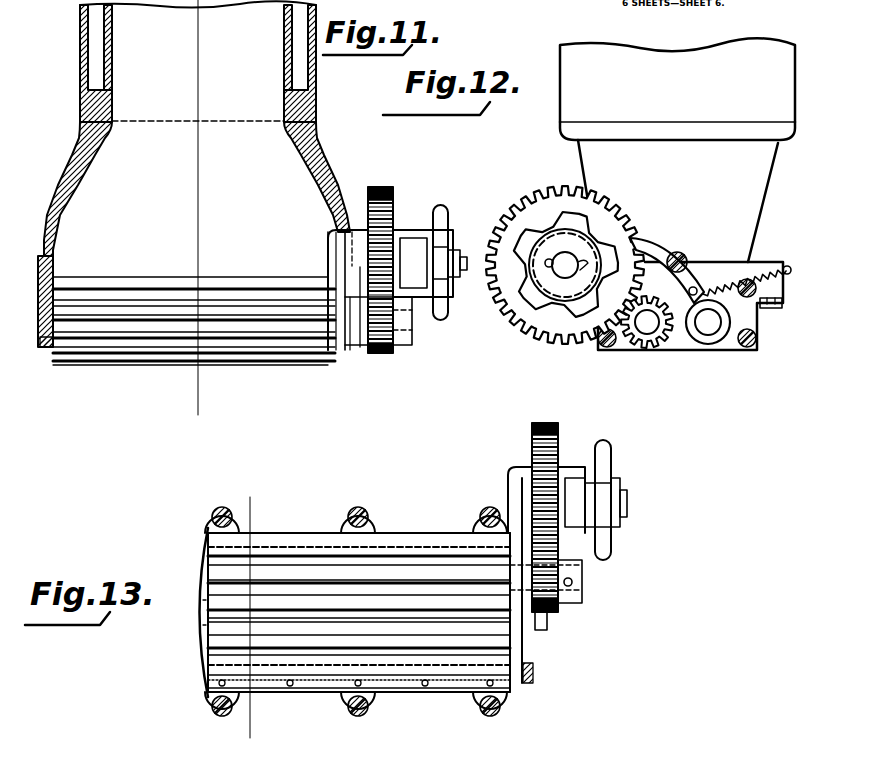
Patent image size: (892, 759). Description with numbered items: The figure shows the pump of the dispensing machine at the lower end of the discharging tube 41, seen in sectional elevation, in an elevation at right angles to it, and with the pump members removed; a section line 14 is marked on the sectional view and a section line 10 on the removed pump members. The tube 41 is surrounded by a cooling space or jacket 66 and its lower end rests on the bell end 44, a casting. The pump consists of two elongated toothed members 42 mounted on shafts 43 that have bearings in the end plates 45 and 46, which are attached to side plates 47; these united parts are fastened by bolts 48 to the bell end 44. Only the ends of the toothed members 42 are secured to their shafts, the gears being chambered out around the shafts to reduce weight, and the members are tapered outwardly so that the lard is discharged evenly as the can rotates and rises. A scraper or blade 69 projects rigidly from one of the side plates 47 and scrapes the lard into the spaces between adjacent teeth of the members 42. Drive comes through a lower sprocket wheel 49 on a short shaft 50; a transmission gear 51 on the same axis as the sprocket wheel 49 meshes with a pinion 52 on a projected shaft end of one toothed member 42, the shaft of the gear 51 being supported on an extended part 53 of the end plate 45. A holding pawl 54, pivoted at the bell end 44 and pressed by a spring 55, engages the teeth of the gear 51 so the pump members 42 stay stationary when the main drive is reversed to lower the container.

In FIG. 13, the section line 10- 10 is at (263, 617).
In FIG. 11, the section line 14- 14 is at (211, 207).
In FIG. 11, the discharging tube 41 is at (84, 70).
In FIG. 12, the discharging tube 41 is at (677, 80).
In FIG. 11, the elongated toothed members 42 is at (130, 307).
In FIG. 12, the elongated toothed members 42 is at (647, 325).
In FIG. 13, the elongated toothed members 42 is at (320, 578).
In FIG. 11, the shafts 43 is at (39, 352).
In FIG. 12, the shafts 43 is at (700, 356).
In FIG. 13, the shafts 43 is at (202, 628).
In FIG. 11, the bell end 44 is at (63, 217).
In FIG. 12, the bell end 44 is at (677, 192).
In FIG. 11, the end plate 45 is at (350, 352).
In FIG. 12, the end plate 45 is at (733, 345).
In FIG. 13, the end plate 45 is at (513, 686).
In FIG. 11, the end plate 46 is at (46, 350).
In FIG. 13, the end plate 46 is at (203, 667).
In FIG. 11, the side plates 47 is at (248, 250).
In FIG. 13, the side plates 47 is at (297, 538).
In FIG. 12, the bolts 48 is at (775, 310).
In FIG. 13, the bolts 48 is at (374, 527).
In FIG. 11, the lower sprocket wheel 49 is at (440, 205).
In FIG. 12, the lower sprocket wheel 49 is at (530, 306).
In FIG. 13, the lower sprocket wheel 49 is at (612, 448).
In FIG. 12, the short shaft 50 is at (566, 264).
In FIG. 13, the short shaft 50 is at (627, 497).
In FIG. 11, the transmission gear 51 is at (387, 185).
In FIG. 12, the transmission gear 51 is at (534, 198).
In FIG. 13, the transmission gear 51 is at (545, 423).
In FIG. 11, the pinion 52 is at (383, 355).
In FIG. 12, the pinion 52 is at (623, 342).
In FIG. 13, the pinion 52 is at (560, 613).
In FIG. 11, the extended part of end plate 53 is at (352, 252).
In FIG. 12, the extended part of end plate 53 is at (540, 240).
In FIG. 13, the extended part of end plate 53 is at (515, 480).
In FIG. 12, the holding pawl 54 is at (663, 235).
In FIG. 13, the holding pawl 54 is at (545, 628).
In FIG. 12, the spring 55 is at (721, 268).
In FIG. 11, the cooling space or jacket 66 is at (97, 68).
In FIG. 11, the scraper or blade 69 is at (188, 366).
In FIG. 12, the scraper or blade 69 is at (710, 347).
In FIG. 13, the scraper or blade 69 is at (460, 681).